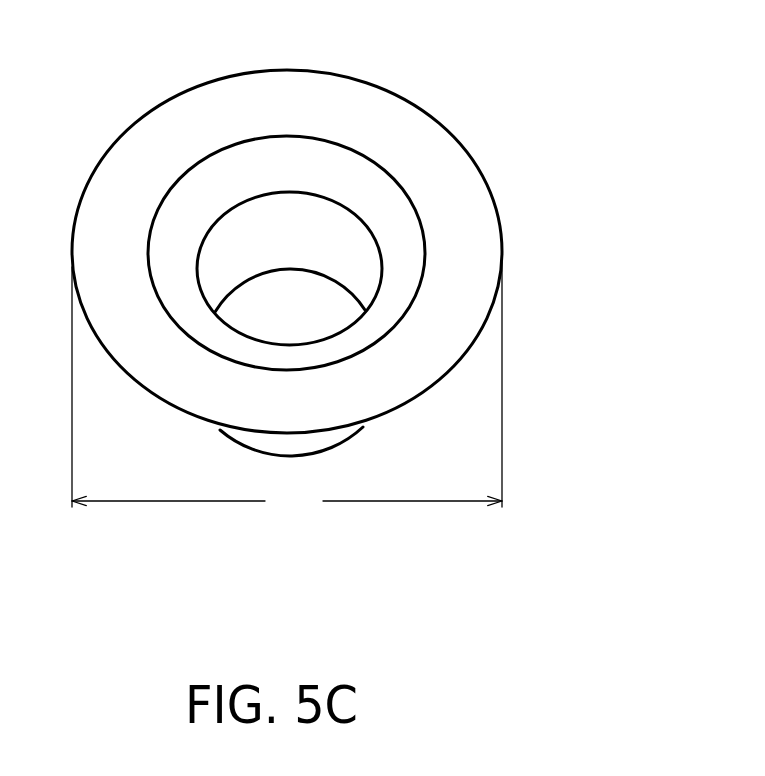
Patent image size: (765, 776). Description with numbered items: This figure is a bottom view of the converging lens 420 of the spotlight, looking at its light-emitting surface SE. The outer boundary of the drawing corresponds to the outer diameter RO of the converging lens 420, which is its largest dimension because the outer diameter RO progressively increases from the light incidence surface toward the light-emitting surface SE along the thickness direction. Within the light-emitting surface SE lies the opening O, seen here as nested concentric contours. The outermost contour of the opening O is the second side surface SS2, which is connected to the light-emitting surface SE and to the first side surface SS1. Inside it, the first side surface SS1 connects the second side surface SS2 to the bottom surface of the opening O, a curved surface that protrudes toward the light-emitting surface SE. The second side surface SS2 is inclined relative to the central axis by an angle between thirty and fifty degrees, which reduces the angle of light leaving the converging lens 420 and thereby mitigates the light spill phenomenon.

The converging lens 420 is at (641, 610).
The light-emitting surface SE is at (136, 177).
The second side surface SS2 is at (195, 205).
The first side surface SS1 is at (247, 235).
The opening O is at (308, 245).
The outer diameter RO is at (287, 391).